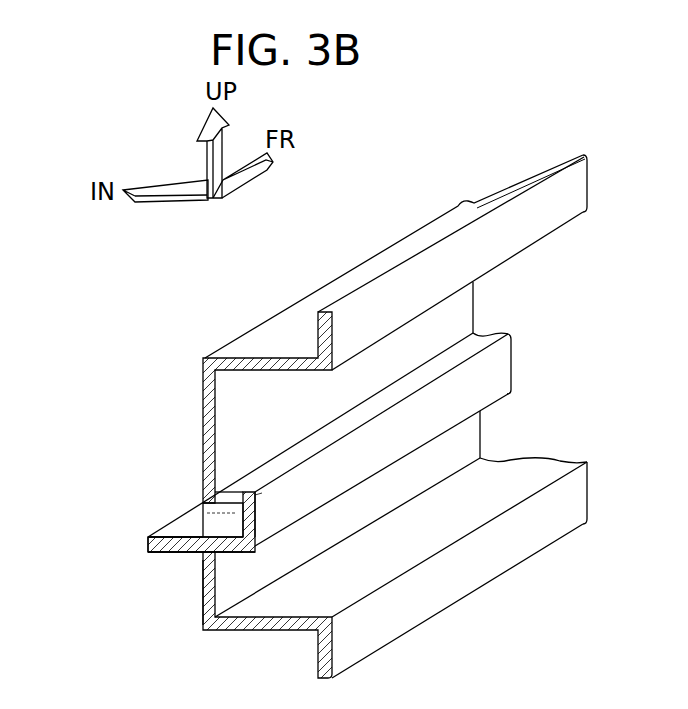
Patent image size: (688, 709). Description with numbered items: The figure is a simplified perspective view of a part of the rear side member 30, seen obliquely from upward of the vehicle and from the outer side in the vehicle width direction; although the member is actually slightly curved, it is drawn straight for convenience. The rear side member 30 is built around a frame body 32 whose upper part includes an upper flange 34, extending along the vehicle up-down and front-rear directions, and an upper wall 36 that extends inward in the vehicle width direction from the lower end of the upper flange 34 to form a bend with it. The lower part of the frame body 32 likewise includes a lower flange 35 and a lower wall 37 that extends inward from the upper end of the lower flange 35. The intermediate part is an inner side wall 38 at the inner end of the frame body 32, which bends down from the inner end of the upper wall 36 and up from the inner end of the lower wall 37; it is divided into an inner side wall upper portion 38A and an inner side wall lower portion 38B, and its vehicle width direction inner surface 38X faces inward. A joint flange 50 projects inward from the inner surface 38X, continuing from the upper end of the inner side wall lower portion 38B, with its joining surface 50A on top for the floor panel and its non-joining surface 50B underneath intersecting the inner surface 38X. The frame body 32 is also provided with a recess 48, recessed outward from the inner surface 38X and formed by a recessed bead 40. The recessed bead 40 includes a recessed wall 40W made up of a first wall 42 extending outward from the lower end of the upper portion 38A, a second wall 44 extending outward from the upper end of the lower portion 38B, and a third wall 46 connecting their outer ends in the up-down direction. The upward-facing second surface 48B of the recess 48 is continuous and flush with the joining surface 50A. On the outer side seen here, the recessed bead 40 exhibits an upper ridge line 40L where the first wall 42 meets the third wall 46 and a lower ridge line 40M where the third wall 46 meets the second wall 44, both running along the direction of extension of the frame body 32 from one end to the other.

The rear side member 30 is at (107, 273).
The frame body 32 is at (217, 293).
The upper flange 34 is at (553, 212).
The lower flange 35 is at (553, 525).
The upper wall 36 is at (433, 230).
The lower wall 37 is at (539, 474).
The inner side wall 38 is at (198, 390).
The inner side wall upper portion 38A is at (200, 420).
The inner side wall lower portion 38B is at (201, 598).
The vehicle width direction inner surface 38X is at (200, 590).
The recessed bead 40 is at (204, 502).
The upper ridge line 40L is at (326, 452).
The lower ridge line 40M is at (368, 488).
The recessed wall 40W is at (238, 524).
The first wall 42 is at (264, 468).
The second wall 44 is at (229, 556).
The third wall 46 is at (284, 498).
The recess 48 is at (212, 506).
The second surface 48B is at (257, 518).
The joint flange 50 is at (161, 549).
The joining surface 50A is at (190, 533).
The non-joining surface 50B is at (178, 553).